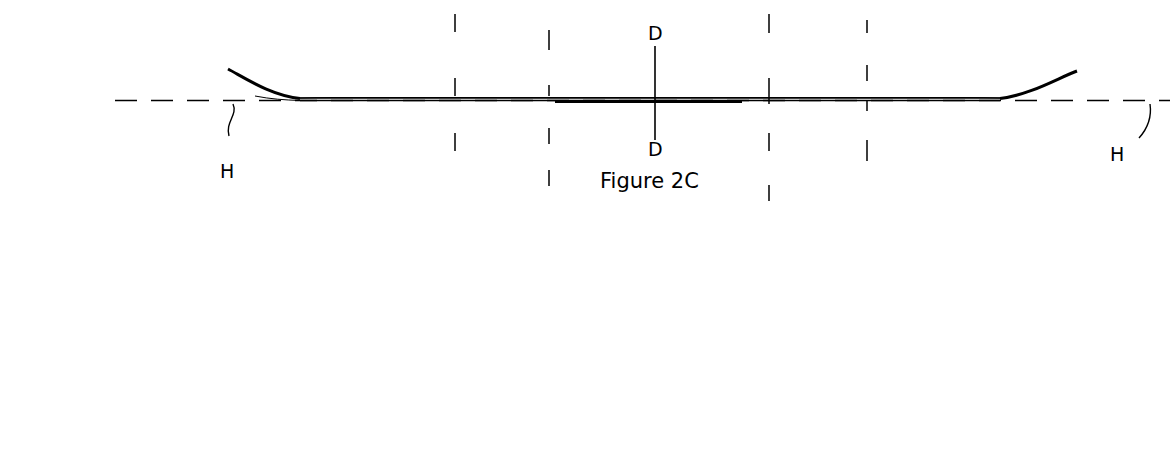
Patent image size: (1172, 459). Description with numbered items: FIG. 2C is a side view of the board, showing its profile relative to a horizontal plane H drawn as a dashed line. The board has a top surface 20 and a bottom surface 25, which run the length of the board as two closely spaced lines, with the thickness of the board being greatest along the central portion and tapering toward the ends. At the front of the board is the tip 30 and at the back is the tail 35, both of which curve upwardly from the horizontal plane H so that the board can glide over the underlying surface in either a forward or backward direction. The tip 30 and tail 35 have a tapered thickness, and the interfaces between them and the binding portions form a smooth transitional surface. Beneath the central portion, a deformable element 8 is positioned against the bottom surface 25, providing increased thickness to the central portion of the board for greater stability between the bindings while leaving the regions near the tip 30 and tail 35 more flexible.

The top surface 20 is at (826, 92).
The bottom surface 25 is at (855, 104).
The deformable element 8 is at (695, 105).
The tip 30 is at (234, 79).
The tail 35 is at (1070, 77).